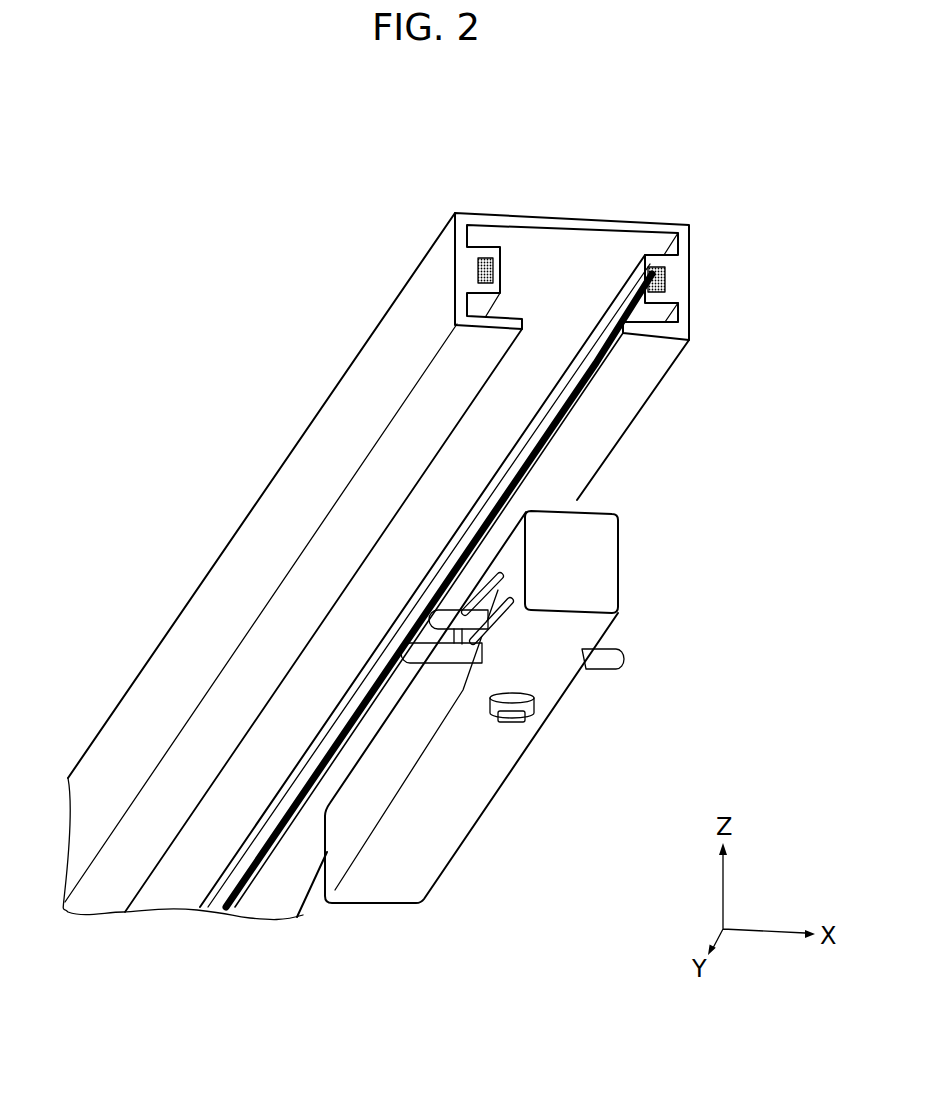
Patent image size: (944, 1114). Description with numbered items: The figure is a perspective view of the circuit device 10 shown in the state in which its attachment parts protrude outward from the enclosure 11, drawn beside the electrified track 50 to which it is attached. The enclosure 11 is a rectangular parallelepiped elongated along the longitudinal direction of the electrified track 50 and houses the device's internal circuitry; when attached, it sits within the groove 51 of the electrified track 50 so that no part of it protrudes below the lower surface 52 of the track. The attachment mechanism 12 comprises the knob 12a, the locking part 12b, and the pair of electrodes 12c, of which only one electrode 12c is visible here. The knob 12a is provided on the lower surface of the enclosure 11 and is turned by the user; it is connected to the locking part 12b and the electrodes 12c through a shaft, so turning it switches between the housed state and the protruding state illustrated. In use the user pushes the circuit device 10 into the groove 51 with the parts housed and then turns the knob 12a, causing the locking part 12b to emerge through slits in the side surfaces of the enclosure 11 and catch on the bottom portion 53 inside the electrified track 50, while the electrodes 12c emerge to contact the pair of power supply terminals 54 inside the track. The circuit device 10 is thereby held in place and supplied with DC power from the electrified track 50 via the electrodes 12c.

The circuit device 10 is at (580, 688).
The enclosure 11 is at (614, 568).
The attachment mechanism 12 is at (524, 760).
The knob 12a is at (532, 716).
The locking part 12b is at (460, 657).
The pair of electrodes 12c is at (453, 630).
The electrified track 50 is at (688, 178).
The groove 51 is at (548, 362).
The lower surface 52 is at (638, 375).
The bottom portion 53 is at (647, 332).
The pair of power supply terminals 54 is at (493, 275).